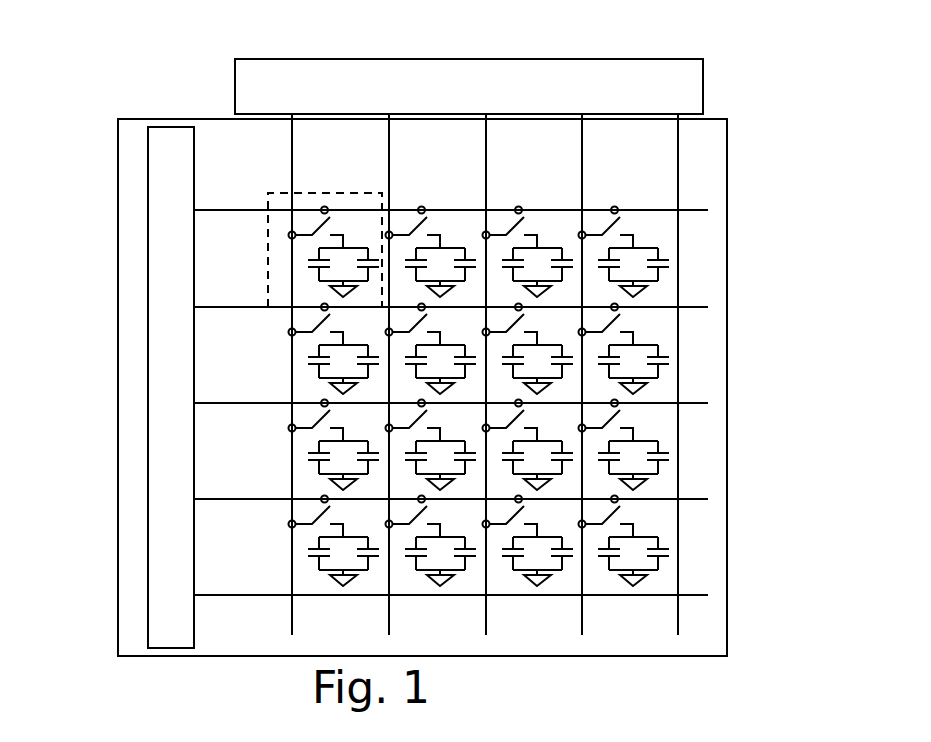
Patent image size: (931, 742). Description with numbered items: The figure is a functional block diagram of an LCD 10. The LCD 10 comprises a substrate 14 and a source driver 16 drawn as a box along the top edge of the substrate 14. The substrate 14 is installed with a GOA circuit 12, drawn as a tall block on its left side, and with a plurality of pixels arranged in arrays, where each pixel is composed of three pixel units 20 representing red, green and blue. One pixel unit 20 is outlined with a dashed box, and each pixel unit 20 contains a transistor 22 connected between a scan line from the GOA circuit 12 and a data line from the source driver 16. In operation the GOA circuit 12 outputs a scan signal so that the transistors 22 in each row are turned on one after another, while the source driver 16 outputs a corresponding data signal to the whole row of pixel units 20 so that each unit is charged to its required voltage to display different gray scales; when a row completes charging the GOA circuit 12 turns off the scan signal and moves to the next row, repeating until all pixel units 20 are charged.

The LCD 10 is at (445, 37).
The GOA circuit 12 is at (148, 270).
The substrate 14 is at (727, 448).
The source driver 16 is at (703, 85).
The pixel unit 20 is at (326, 193).
The transistor 22 is at (437, 221).